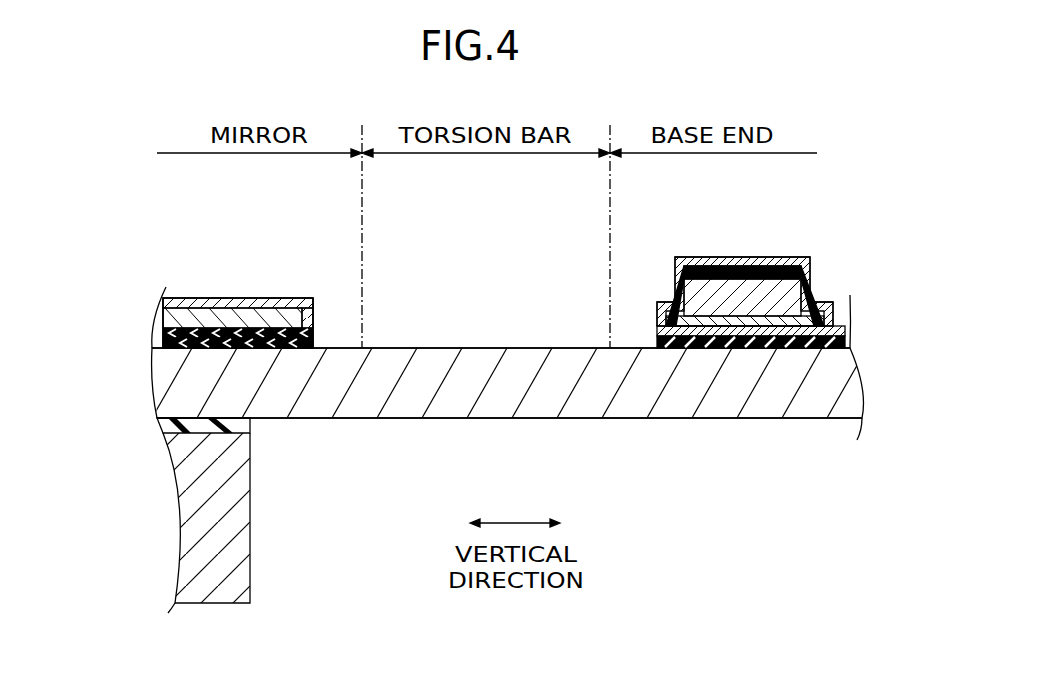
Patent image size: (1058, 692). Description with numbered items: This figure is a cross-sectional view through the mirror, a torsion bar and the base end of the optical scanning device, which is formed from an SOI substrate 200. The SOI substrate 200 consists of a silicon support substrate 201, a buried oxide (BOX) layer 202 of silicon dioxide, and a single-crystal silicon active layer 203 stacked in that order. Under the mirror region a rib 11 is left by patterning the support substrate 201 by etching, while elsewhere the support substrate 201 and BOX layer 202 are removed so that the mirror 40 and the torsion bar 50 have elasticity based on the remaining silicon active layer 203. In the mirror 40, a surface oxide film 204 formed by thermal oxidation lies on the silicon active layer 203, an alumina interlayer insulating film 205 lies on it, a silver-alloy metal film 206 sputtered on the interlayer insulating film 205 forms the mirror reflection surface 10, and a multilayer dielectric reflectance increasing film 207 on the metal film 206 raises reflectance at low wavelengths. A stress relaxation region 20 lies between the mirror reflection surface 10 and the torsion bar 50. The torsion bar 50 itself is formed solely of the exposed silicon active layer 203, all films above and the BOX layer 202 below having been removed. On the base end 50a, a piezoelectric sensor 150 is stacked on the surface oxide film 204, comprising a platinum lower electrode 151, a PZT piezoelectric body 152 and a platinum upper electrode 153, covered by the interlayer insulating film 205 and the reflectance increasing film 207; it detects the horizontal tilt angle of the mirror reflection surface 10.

The mirror reflection surface 10 is at (237, 305).
The rib 11 is at (240, 545).
The stress relaxation region 20 is at (340, 383).
The mirror 40 is at (180, 283).
The torsion bar 50 is at (500, 385).
The base end of the torsion bar 50a is at (640, 380).
The piezoelectric sensor 150 is at (812, 254).
The lower electrode 151 is at (712, 330).
The piezoelectric body 152 is at (737, 303).
The upper electrode 153 is at (773, 282).
The SOI substrate 200 is at (75, 367).
The support substrate 201 is at (182, 514).
The buried oxide (BOX) layer 202 is at (190, 424).
The silicon active layer 203 is at (177, 383).
The surface oxide film 204 is at (165, 345).
The interlayer insulating film 205 is at (163, 333).
The metal film 206 is at (163, 318).
The reflectance increasing film 207 is at (163, 300).